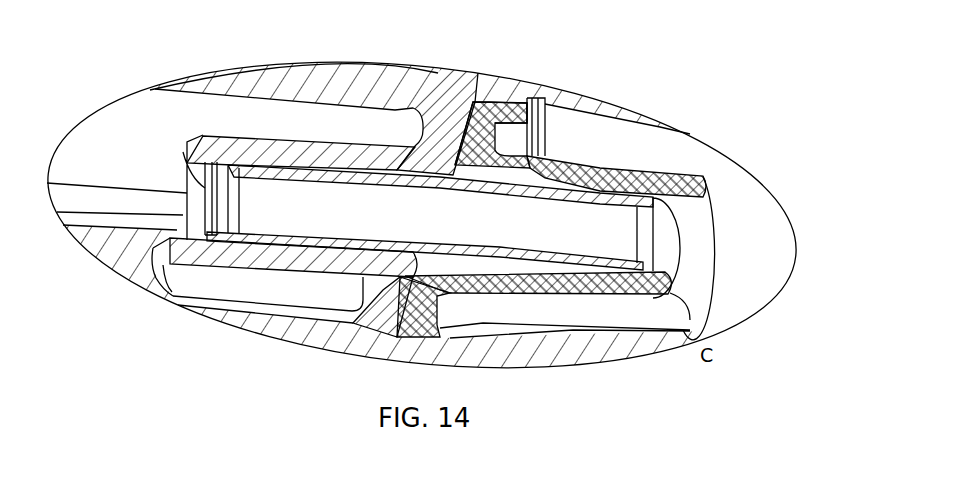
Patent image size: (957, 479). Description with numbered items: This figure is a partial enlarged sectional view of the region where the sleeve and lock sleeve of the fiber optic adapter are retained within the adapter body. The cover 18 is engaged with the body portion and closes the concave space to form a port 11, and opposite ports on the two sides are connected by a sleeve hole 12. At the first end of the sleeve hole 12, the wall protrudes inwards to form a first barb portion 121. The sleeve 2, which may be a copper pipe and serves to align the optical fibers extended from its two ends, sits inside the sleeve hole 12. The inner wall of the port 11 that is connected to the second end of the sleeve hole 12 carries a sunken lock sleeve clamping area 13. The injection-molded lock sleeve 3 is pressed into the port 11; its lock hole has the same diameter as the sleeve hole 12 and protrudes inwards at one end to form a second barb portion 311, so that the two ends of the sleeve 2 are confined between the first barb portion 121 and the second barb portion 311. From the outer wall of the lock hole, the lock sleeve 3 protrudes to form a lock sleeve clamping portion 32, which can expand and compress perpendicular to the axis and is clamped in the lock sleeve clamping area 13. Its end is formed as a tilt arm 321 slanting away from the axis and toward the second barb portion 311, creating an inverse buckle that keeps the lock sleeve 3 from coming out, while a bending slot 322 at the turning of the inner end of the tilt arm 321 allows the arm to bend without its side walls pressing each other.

The port 11 is at (627, 132).
The cover 18 is at (607, 108).
The lock sleeve clamping area 13 is at (532, 107).
The sleeve hole 12 is at (220, 167).
The first barb portion 121 is at (187, 150).
The sleeve 2 is at (277, 183).
The second barb portion 311 is at (673, 223).
The lock sleeve 3 is at (655, 168).
The lock sleeve clamping portion 32 is at (513, 130).
The tilt arm 321 is at (490, 99).
The bending slot 322 is at (507, 103).